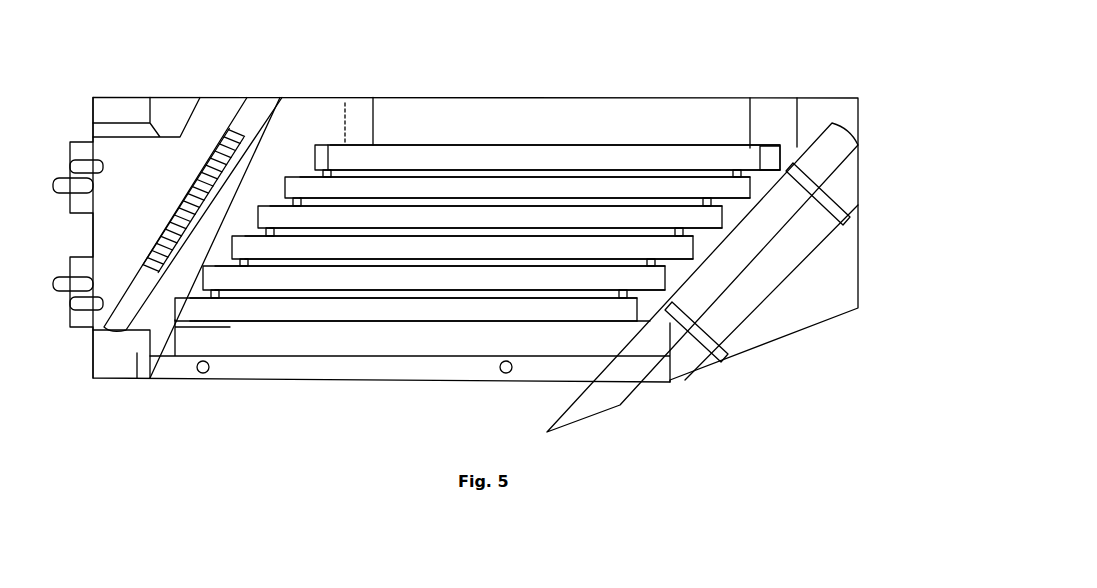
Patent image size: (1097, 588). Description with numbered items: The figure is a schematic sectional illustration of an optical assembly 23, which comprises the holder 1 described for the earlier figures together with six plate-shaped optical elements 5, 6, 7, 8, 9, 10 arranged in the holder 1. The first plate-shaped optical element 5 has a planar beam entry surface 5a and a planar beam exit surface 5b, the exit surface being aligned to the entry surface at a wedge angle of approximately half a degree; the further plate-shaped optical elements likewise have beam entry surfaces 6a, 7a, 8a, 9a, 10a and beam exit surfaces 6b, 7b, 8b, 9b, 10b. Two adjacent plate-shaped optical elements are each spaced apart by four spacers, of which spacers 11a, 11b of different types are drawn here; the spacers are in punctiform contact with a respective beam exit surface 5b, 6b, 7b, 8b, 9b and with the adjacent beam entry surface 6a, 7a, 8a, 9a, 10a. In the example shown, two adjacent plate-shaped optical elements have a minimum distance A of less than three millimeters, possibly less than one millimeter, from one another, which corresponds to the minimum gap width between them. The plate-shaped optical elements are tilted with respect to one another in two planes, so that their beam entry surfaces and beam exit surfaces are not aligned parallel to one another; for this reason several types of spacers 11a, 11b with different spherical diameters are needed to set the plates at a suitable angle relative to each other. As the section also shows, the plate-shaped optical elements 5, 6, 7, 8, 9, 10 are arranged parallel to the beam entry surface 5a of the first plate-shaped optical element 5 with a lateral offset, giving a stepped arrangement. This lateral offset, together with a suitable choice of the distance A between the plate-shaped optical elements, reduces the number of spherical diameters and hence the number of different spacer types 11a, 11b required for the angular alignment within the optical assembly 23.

The holder 1 is at (235, 76).
The first plate-shaped optical element 5 is at (370, 145).
The beam entry surface 5a is at (534, 137).
The beam exit surface 5b is at (582, 158).
The plate-shaped optical element 6 is at (392, 192).
The beam entry surface 6a is at (605, 185).
The beam exit surface 6b is at (629, 200).
The plate-shaped optical element 7 is at (400, 222).
The beam entry surface 7a is at (644, 222).
The beam exit surface 7b is at (640, 192).
The plate-shaped optical element 8 is at (420, 254).
The beam entry surface 8a is at (281, 249).
The beam exit surface 8b is at (304, 271).
The plate-shaped optical element 9 is at (433, 282).
The beam entry surface 9a is at (351, 276).
The beam exit surface 9b is at (389, 299).
The plate-shaped optical element 10 is at (450, 312).
The beam entry surface 10a is at (490, 311).
The beam exit surface 10b is at (533, 334).
The spacer 11a is at (310, 143).
The spacer 11b is at (750, 100).
The optical assembly 23 is at (906, 100).
The minimum distance A is at (670, 352).